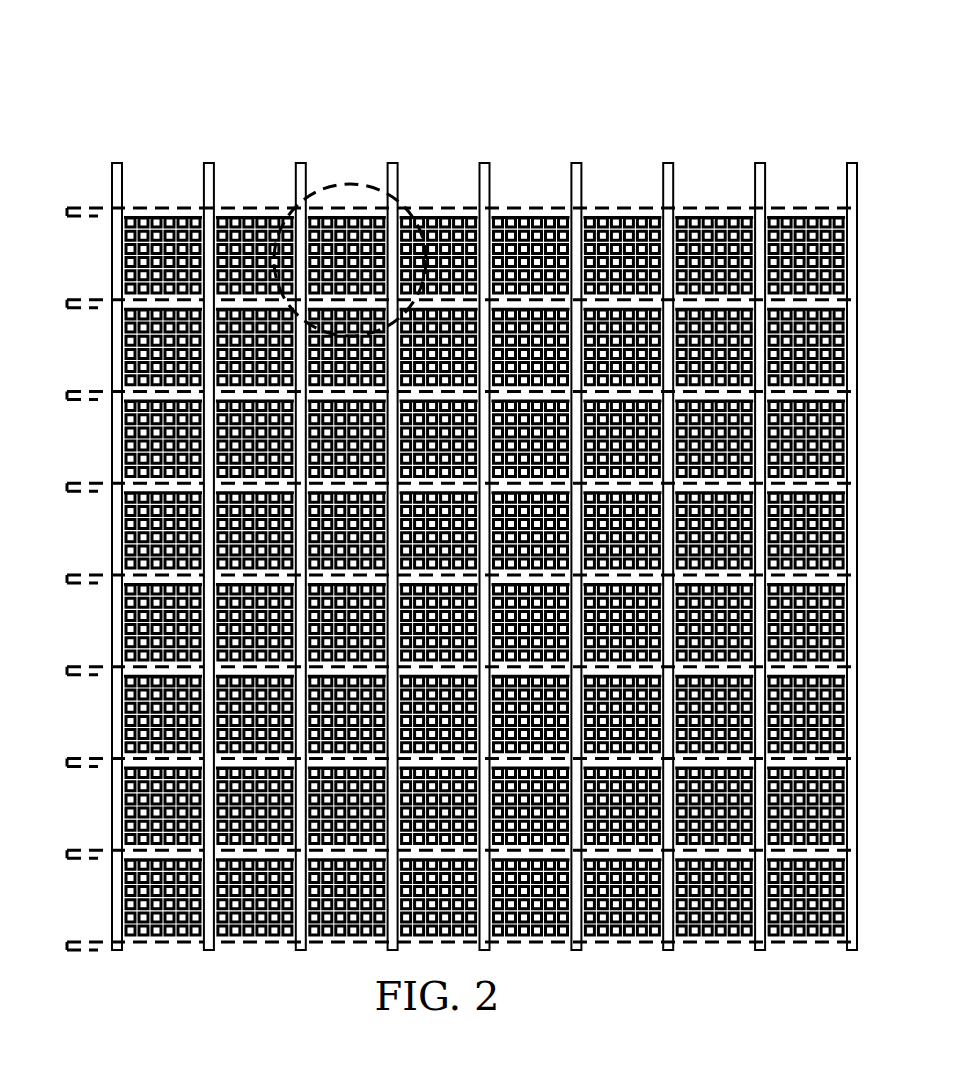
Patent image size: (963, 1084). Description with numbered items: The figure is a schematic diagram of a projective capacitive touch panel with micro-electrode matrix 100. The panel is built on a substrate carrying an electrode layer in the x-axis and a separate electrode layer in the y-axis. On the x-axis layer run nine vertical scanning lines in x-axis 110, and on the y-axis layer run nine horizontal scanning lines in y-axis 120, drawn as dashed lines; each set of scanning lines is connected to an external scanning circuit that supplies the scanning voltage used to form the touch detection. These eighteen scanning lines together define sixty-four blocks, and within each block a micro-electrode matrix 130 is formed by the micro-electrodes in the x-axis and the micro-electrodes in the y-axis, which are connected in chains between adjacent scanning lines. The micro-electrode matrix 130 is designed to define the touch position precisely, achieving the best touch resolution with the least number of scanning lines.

The projective capacitive touch panel with micro-electrode matrix 100 is at (529, 100).
The scanning lines in x-axis 110 is at (222, 180).
The scanning lines in y-axis 120 is at (699, 204).
The micro-electrode matrix 130 is at (356, 180).